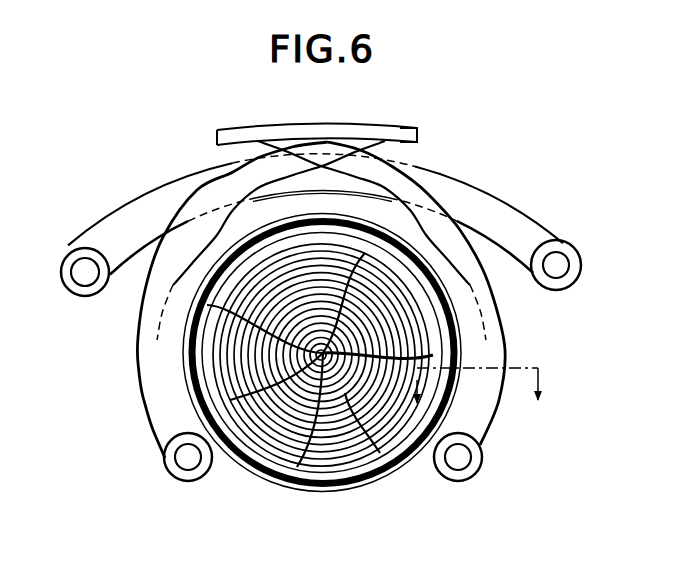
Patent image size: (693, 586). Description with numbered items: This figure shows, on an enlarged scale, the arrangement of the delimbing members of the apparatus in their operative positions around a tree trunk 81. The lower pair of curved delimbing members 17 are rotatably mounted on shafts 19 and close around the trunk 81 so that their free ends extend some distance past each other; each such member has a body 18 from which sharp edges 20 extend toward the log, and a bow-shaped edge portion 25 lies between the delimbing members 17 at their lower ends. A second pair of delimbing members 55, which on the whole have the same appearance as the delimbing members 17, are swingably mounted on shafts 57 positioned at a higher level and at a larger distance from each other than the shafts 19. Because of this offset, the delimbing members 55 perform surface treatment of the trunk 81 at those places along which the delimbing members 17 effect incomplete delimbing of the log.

The delimbing member 17 is at (157, 418).
The body 18 is at (366, 130).
The shaft 19 is at (192, 464).
The sharp edge 20 is at (402, 130).
The bow-shaped edge portion 25 is at (327, 492).
The delimbing member 55 is at (120, 220).
The shaft 57 is at (86, 274).
The trunk 81 is at (433, 340).